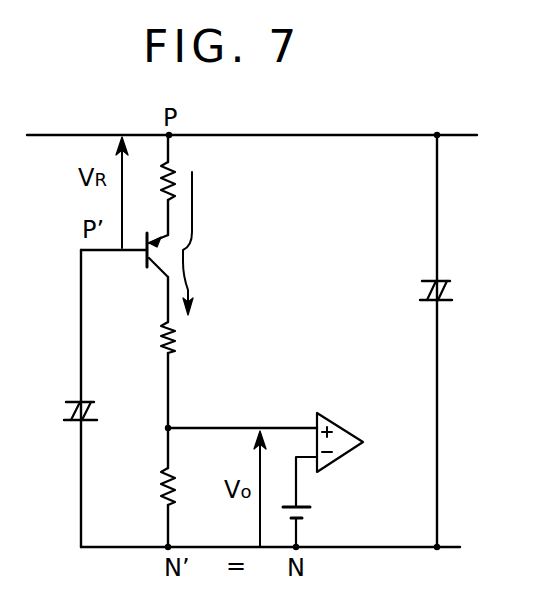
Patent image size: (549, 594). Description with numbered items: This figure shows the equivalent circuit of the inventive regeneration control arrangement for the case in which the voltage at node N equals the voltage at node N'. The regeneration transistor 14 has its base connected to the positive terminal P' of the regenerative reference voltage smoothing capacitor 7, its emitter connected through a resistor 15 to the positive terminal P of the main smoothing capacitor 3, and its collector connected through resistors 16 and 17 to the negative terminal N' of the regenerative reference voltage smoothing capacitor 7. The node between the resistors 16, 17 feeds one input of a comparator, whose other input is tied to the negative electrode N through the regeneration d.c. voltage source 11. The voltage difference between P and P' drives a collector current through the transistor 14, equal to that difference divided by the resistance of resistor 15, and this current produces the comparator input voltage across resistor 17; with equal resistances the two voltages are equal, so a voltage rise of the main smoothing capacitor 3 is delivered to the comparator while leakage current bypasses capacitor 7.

The main smoothing capacitor 3 is at (453, 290).
The regenerative reference voltage smoothing capacitor 7 is at (68, 401).
The regeneration d.c. voltage source 11 is at (311, 510).
The regeneration transistor 14 is at (186, 256).
The resistor 15 is at (176, 170).
The resistor 16 is at (176, 345).
The resistor 17 is at (163, 476).